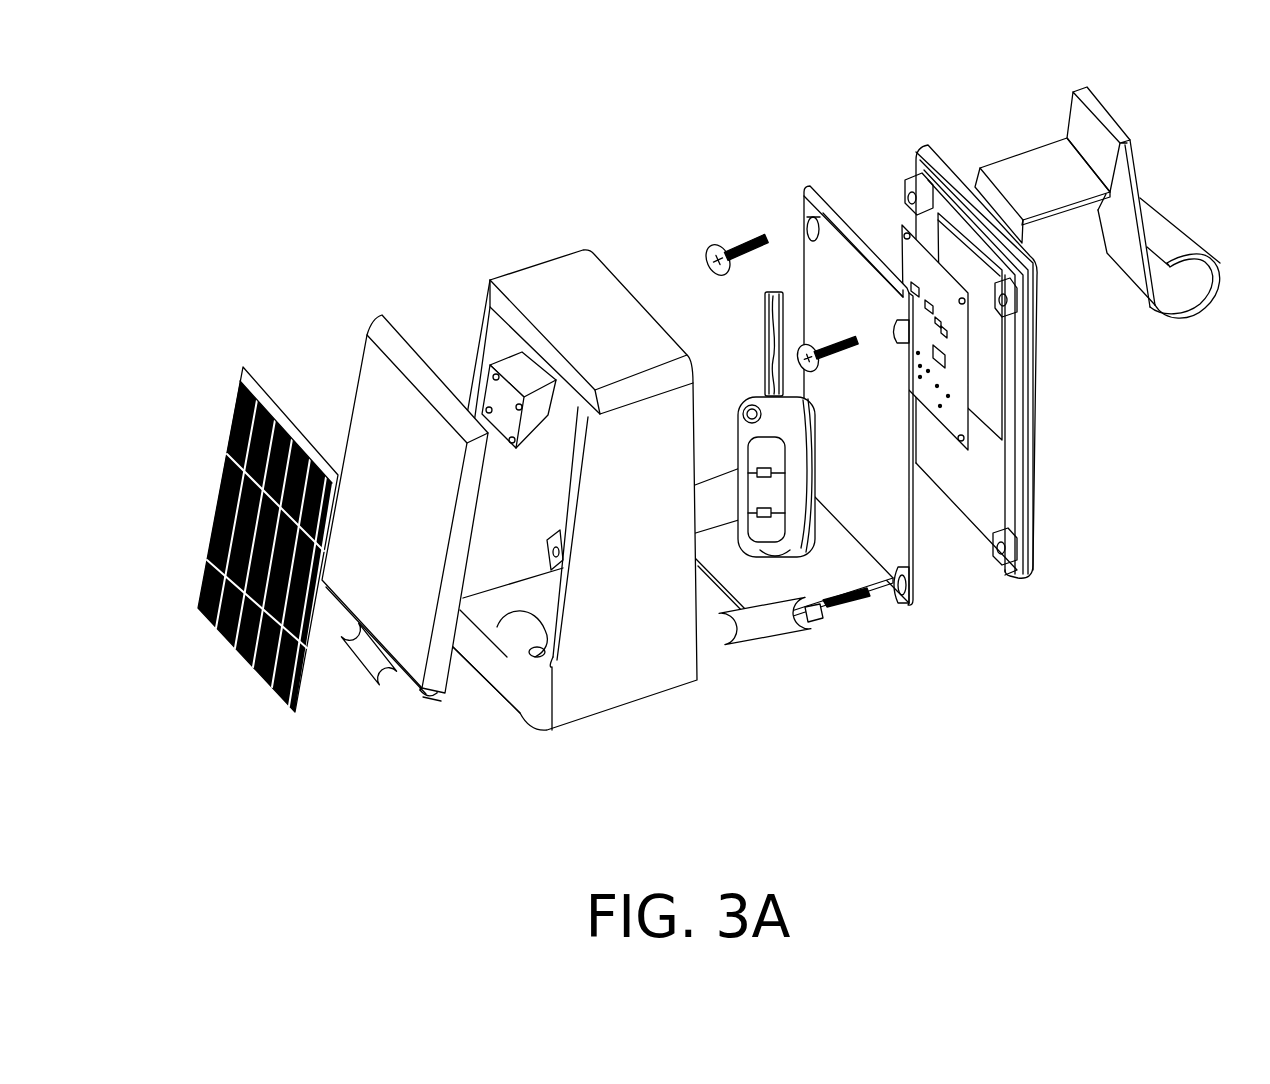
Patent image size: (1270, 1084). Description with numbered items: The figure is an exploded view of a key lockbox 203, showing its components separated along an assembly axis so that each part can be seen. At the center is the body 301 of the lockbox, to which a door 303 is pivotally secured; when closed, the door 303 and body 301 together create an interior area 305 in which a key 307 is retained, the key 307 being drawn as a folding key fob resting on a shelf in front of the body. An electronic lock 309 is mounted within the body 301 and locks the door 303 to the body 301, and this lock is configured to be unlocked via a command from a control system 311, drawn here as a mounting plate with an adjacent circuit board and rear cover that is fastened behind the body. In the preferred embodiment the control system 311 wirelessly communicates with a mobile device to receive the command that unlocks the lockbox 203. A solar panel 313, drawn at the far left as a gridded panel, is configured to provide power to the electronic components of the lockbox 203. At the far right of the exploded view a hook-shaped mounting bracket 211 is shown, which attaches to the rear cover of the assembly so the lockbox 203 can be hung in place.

The lockbox 203 is at (338, 144).
The mounting hook bracket 211 is at (1105, 115).
The body 301 is at (566, 255).
The door 303 is at (373, 312).
The interior area 305 is at (520, 598).
The key 307 is at (752, 396).
The electronic lock 309 is at (487, 362).
The control system 311 is at (901, 255).
The solar panel 313 is at (260, 387).